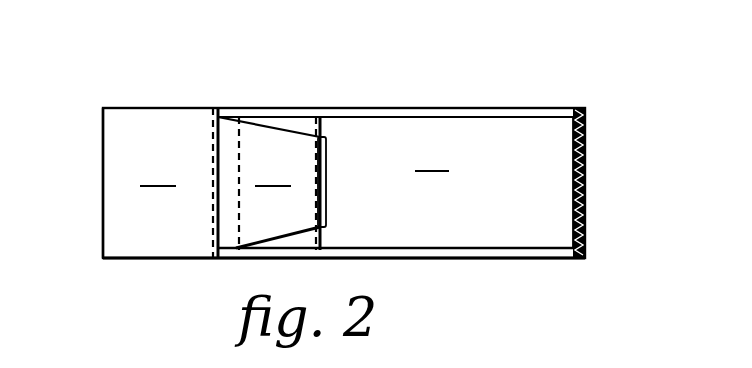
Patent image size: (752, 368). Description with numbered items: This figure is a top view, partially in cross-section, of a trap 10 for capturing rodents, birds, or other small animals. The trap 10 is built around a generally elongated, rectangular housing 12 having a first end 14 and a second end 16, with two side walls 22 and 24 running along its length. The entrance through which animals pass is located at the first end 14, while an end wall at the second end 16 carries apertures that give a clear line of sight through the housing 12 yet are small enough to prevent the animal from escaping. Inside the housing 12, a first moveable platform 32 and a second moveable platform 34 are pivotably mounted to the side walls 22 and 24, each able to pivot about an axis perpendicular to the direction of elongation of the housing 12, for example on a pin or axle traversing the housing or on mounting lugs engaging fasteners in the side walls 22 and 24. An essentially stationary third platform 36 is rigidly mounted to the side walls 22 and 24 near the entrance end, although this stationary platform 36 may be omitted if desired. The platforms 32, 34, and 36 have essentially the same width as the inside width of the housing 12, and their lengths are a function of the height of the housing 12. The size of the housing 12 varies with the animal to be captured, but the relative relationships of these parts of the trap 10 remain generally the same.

The trap 10 is at (522, 84).
The housing 12 is at (537, 363).
The first end 14 is at (80, 137).
The second end 16 is at (640, 168).
The side wall 22 is at (380, 107).
The side wall 24 is at (492, 259).
The first moveable platform 32 is at (272, 183).
The second moveable platform 34 is at (446, 182).
The stationary platform 36 is at (157, 173).